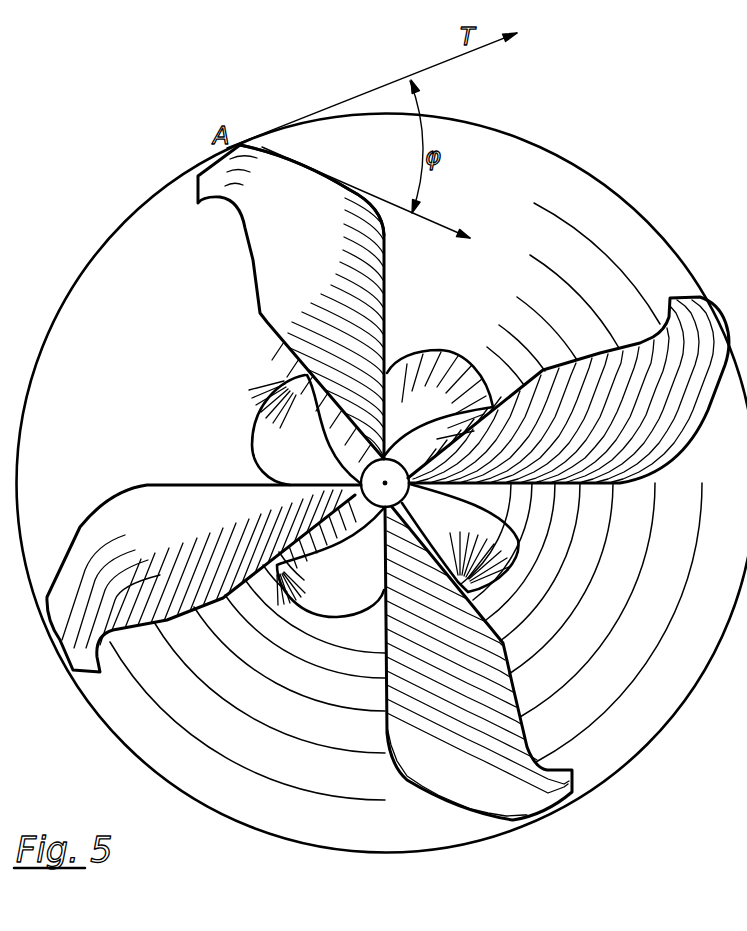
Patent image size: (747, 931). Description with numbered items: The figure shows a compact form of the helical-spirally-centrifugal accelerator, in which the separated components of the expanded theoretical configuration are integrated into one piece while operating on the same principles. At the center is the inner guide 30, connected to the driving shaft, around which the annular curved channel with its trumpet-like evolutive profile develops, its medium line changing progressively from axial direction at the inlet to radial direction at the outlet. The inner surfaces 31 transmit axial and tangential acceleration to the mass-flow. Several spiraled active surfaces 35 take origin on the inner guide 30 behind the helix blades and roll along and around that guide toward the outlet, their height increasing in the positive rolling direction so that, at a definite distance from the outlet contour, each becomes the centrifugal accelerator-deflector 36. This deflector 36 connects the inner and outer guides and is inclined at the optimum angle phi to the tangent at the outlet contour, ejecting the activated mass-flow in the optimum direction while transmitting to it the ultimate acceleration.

The inner guide 30 is at (373, 480).
The inner surface 31 is at (272, 291).
The spiraled active surface 35 is at (443, 352).
The centrifugal accelerator-deflector 36 is at (306, 165).